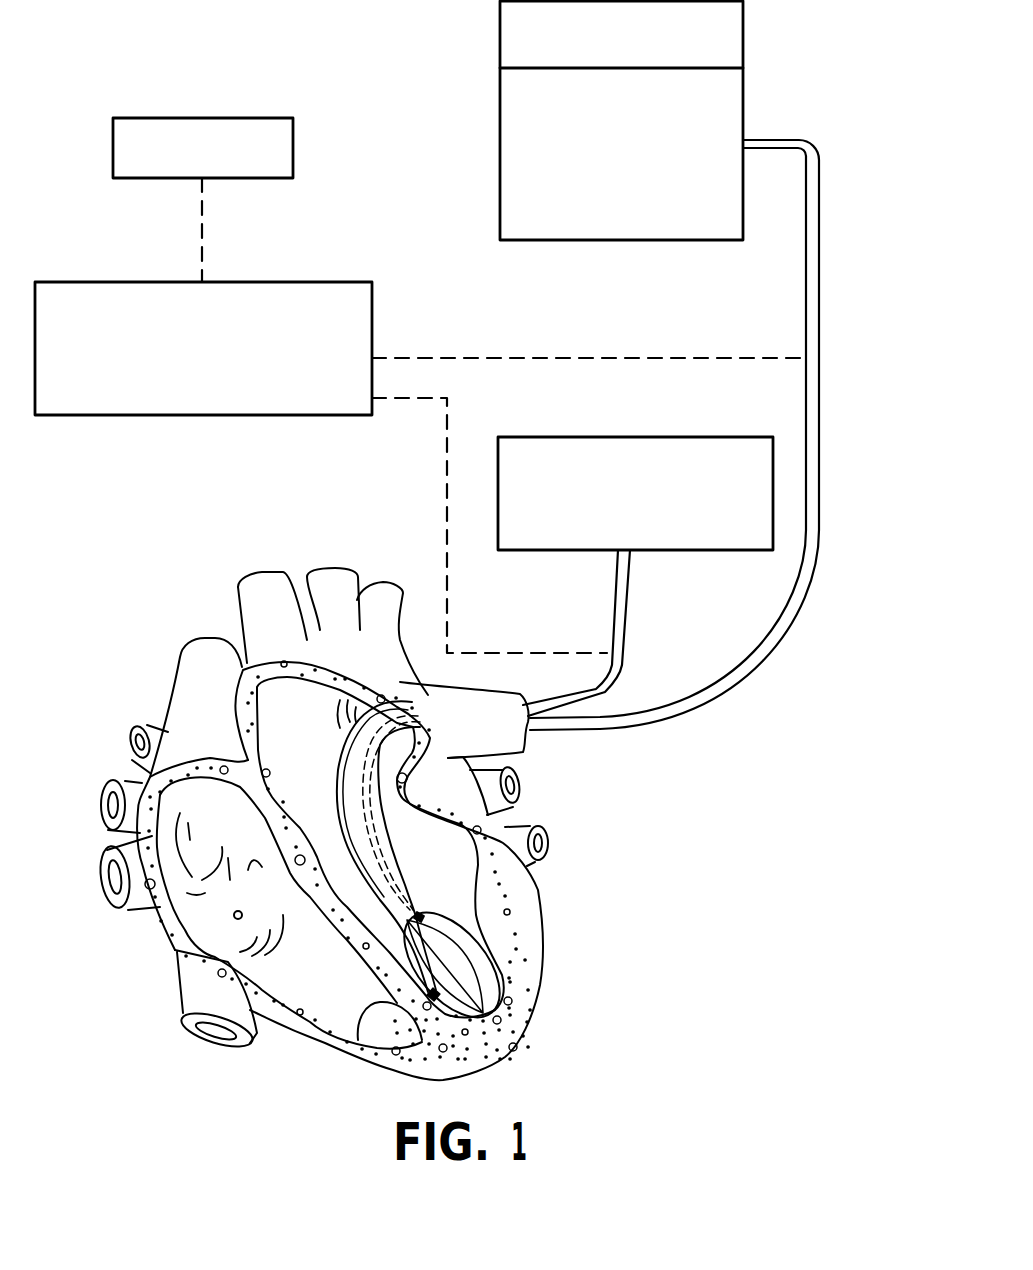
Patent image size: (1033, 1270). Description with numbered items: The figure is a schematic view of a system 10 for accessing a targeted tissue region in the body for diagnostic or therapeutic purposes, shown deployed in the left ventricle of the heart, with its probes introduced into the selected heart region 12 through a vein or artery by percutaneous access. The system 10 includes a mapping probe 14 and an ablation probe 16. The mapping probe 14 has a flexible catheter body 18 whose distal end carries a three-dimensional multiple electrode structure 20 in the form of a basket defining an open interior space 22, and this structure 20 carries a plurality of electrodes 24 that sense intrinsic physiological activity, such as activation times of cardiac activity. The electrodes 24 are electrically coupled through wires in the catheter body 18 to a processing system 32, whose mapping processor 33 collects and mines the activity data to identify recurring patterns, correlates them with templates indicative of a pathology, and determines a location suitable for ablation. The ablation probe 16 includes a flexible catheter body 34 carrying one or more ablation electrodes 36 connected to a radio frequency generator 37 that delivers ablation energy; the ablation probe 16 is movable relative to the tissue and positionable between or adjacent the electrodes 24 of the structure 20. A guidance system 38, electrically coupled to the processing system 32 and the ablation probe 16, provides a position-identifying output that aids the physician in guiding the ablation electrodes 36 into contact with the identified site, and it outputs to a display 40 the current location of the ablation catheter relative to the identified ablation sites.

The system 10 is at (215, 489).
The heart region 12 is at (345, 824).
The mapping probe 14 is at (388, 822).
The ablation probe 16 is at (355, 893).
The catheter body 18 is at (390, 867).
The multiple electrode structure 20 is at (522, 945).
The open interior space 22 is at (471, 987).
The electrodes 24 is at (449, 913).
The processing system 32 is at (648, 120).
The mapping processor 33 is at (601, 62).
The flexible catheter body 34 is at (330, 770).
The ablation electrodes 36 is at (380, 1002).
The radio frequency generator 37 is at (685, 550).
The guidance system 38 is at (372, 323).
The display 40 is at (293, 170).